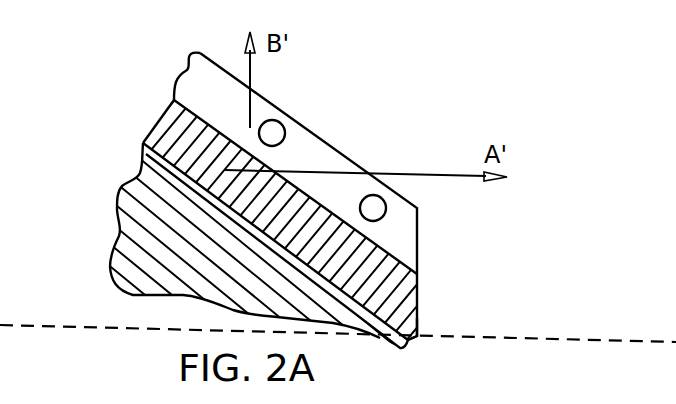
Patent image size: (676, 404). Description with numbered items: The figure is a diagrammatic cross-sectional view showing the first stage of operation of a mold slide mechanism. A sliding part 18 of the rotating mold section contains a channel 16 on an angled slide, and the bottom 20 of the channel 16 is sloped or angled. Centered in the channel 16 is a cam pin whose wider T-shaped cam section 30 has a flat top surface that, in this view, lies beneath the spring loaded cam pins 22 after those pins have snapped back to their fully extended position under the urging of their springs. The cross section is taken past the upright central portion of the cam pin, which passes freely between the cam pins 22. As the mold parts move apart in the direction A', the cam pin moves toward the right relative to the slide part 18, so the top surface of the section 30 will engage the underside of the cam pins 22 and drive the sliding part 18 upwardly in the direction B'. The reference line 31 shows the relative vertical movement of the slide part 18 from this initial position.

The channel 16 is at (309, 146).
The sliding part 18 is at (120, 247).
The bottom of channel 20 is at (414, 324).
The spring loaded cam pins 22 is at (282, 121).
The T-shaped cam section 30 is at (410, 273).
The reference line 31 is at (546, 337).